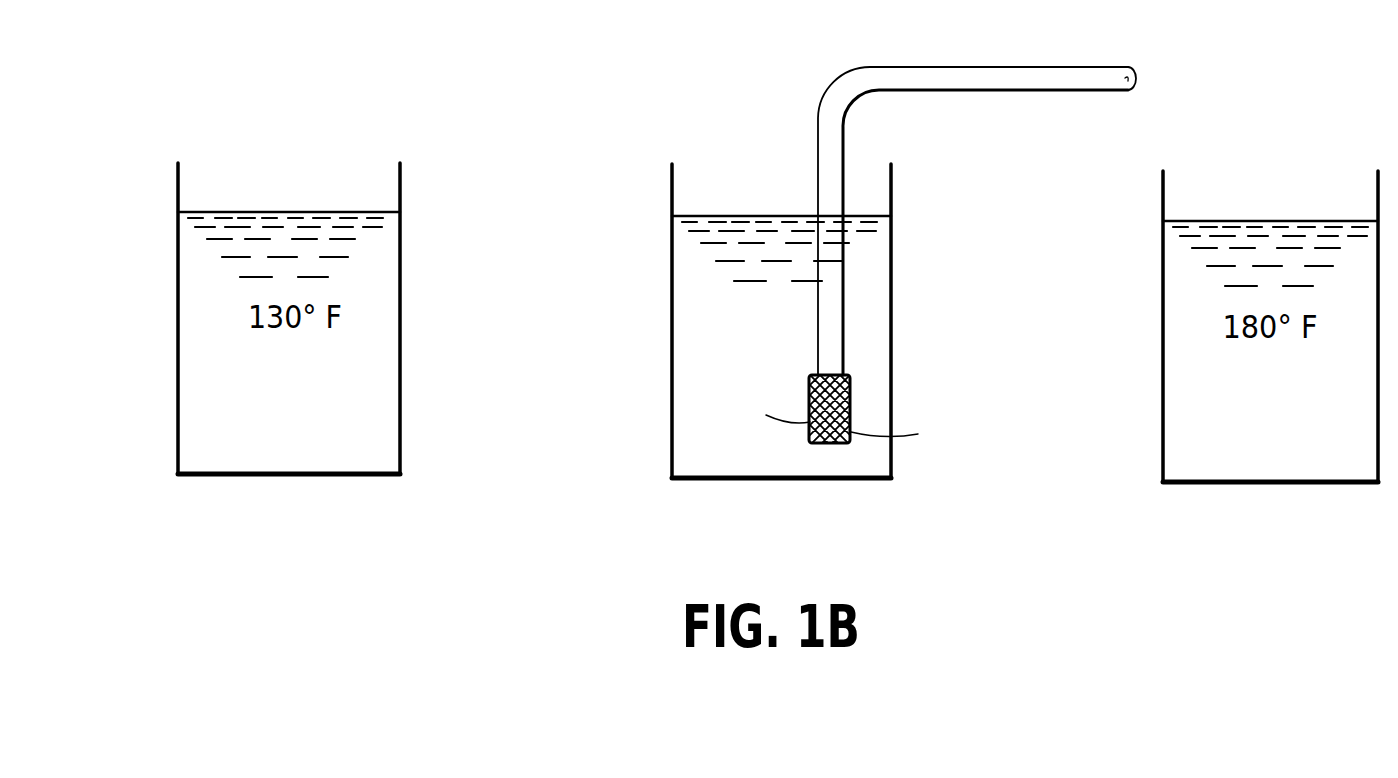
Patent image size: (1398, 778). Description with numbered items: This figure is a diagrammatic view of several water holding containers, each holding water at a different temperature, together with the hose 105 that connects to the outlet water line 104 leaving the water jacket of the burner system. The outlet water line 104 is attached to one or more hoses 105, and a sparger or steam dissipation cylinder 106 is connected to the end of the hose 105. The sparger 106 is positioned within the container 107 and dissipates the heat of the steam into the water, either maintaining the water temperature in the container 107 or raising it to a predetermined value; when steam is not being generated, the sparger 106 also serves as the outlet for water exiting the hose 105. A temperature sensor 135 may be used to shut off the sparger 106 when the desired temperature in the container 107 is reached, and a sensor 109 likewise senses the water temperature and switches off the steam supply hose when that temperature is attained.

The outlet water line 104 is at (1087, 66).
The hose 105 is at (930, 65).
The sparger 106 is at (851, 392).
The container 107 is at (892, 284).
The sensor 109 is at (913, 436).
The temperature sensor 135 is at (761, 409).